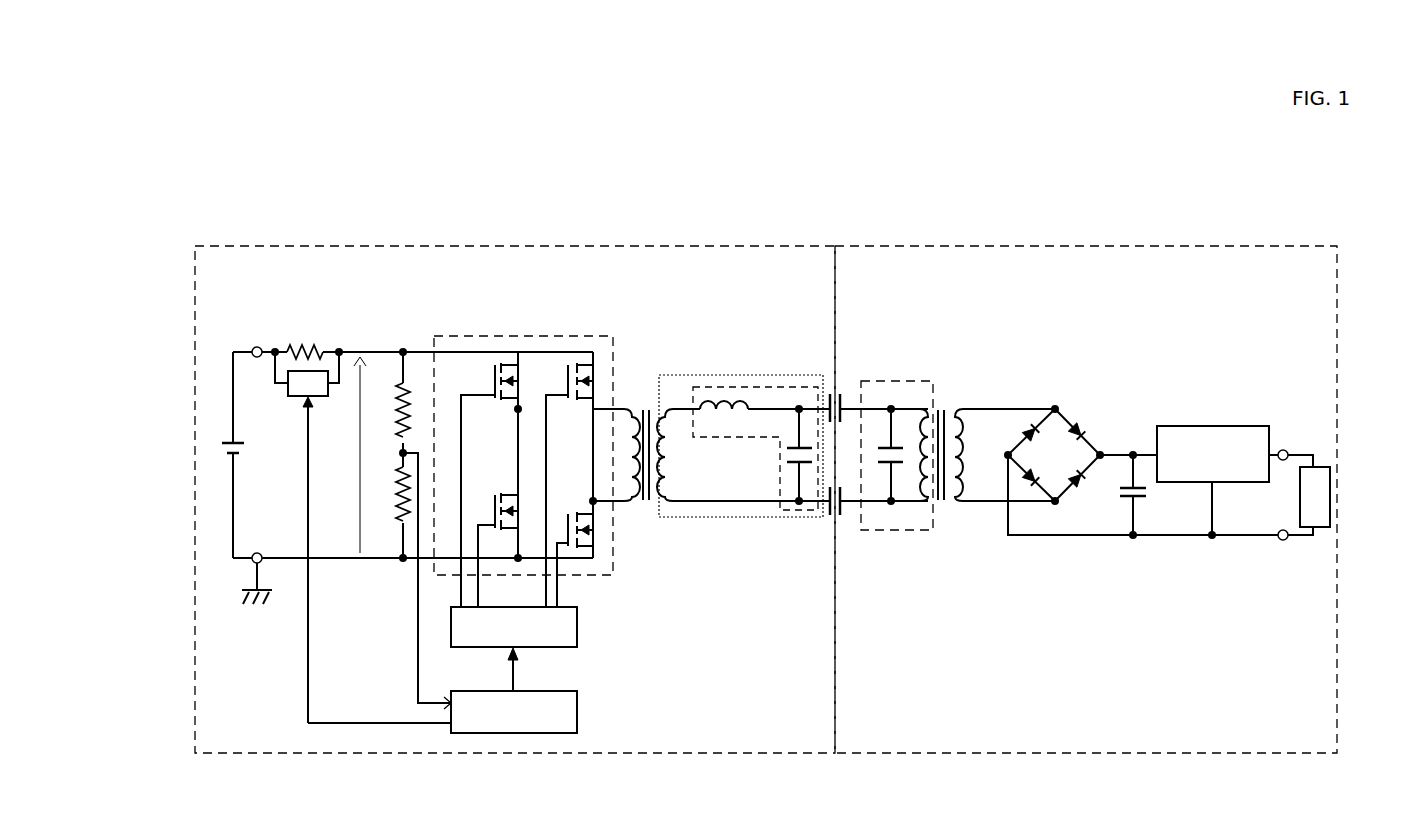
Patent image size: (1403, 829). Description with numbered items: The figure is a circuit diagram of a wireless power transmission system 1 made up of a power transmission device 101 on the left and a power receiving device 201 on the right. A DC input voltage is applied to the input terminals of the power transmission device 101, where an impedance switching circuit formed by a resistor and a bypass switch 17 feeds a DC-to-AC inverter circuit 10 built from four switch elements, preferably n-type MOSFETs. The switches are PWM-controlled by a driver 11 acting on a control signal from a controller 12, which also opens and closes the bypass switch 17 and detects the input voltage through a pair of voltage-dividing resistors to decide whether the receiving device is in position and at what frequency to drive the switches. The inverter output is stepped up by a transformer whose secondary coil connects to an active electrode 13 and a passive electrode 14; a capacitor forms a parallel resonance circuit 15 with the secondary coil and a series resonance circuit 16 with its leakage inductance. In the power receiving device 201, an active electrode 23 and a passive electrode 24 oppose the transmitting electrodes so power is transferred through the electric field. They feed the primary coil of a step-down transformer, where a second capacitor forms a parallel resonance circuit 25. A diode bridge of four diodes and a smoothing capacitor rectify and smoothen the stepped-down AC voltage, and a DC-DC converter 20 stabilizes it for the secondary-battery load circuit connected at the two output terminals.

The wireless power transmission system 1 is at (1152, 196).
The power transmission device 101 is at (243, 244).
The power receiving device 201 is at (1319, 244).
The DC-to-AC inverter circuit 10 is at (456, 334).
The driver 11 is at (578, 622).
The controller 12 is at (578, 700).
The active electrode 13 is at (830, 394).
The passive electrode 14 is at (830, 516).
The parallel resonance circuit 15 is at (682, 375).
The series resonance circuit 16 is at (738, 386).
The bypass switch 17 is at (298, 397).
The DC-DC converter 20 is at (1251, 426).
The active electrode 23 is at (841, 394).
The passive electrode 24 is at (841, 516).
The parallel resonance circuit 25 is at (910, 380).